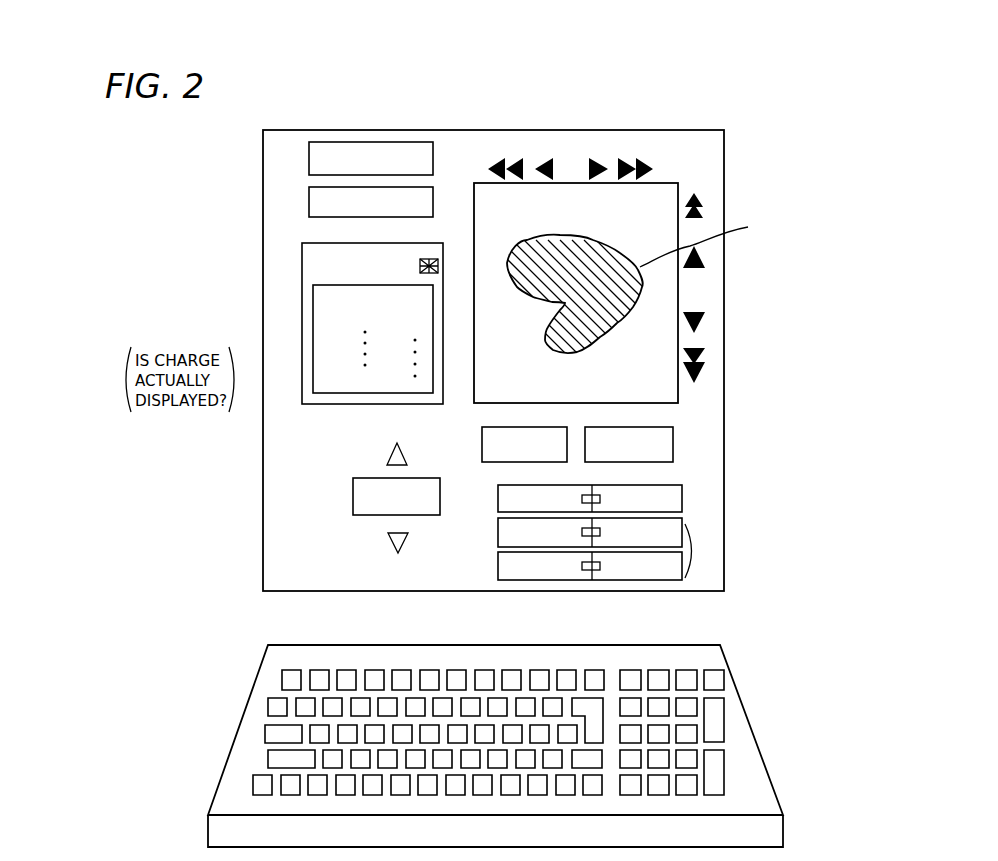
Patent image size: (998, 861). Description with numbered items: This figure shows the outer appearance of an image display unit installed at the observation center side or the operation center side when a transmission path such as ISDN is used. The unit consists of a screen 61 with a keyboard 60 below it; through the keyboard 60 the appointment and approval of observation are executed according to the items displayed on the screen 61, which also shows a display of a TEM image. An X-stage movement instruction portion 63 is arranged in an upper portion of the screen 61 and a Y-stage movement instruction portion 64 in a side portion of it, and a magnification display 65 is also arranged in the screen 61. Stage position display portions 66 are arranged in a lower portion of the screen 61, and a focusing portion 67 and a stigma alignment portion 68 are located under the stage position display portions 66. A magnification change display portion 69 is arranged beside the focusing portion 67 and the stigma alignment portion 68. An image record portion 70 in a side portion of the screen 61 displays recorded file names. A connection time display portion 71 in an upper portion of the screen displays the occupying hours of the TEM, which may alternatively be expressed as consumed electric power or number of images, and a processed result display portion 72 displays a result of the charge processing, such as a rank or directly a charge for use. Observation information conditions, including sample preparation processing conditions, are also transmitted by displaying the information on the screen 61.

The keyboard 60 is at (737, 726).
The screen 61 is at (677, 183).
The X-stage movement instruction portion 63 is at (572, 152).
The Y-stage movement instruction portion 64 is at (704, 293).
The magnification display 65 is at (667, 390).
The stage position display portions 66 is at (673, 445).
The focusing portion 67 is at (683, 497).
The stigma alignment portion 68 is at (693, 551).
The magnification change display portion 69 is at (305, 523).
The image record portion 70 is at (302, 358).
The connection time display portion 71 is at (413, 160).
The processed result display portion 72 is at (309, 206).